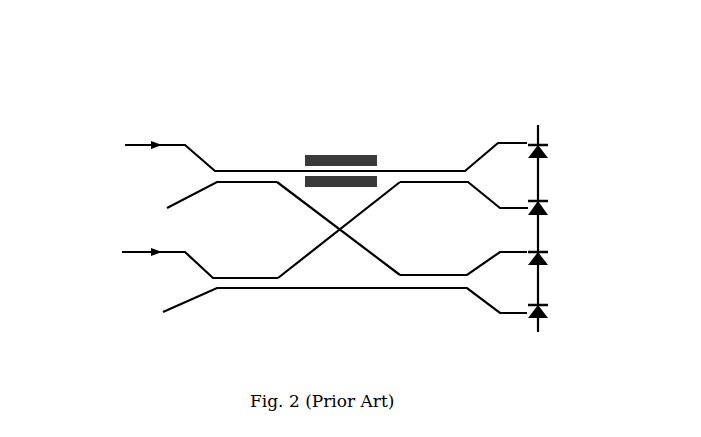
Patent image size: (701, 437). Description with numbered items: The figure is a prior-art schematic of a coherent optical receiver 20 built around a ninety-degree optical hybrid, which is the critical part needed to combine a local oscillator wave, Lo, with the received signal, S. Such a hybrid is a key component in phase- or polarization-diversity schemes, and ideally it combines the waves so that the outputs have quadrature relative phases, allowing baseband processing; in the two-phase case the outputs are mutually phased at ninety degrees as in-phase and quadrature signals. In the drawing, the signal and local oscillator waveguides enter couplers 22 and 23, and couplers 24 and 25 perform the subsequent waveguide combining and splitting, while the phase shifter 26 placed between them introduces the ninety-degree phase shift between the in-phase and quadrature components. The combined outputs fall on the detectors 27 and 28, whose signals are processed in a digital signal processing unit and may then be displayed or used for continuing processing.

The coherent receiver 20 is at (103, 80).
The coupler 22 is at (215, 176).
The coupler 23 is at (261, 282).
The coupler 24 is at (452, 175).
The coupler 25 is at (463, 282).
The phase shifter 26 is at (338, 216).
The detector 27 is at (538, 177).
The detector 28 is at (538, 285).